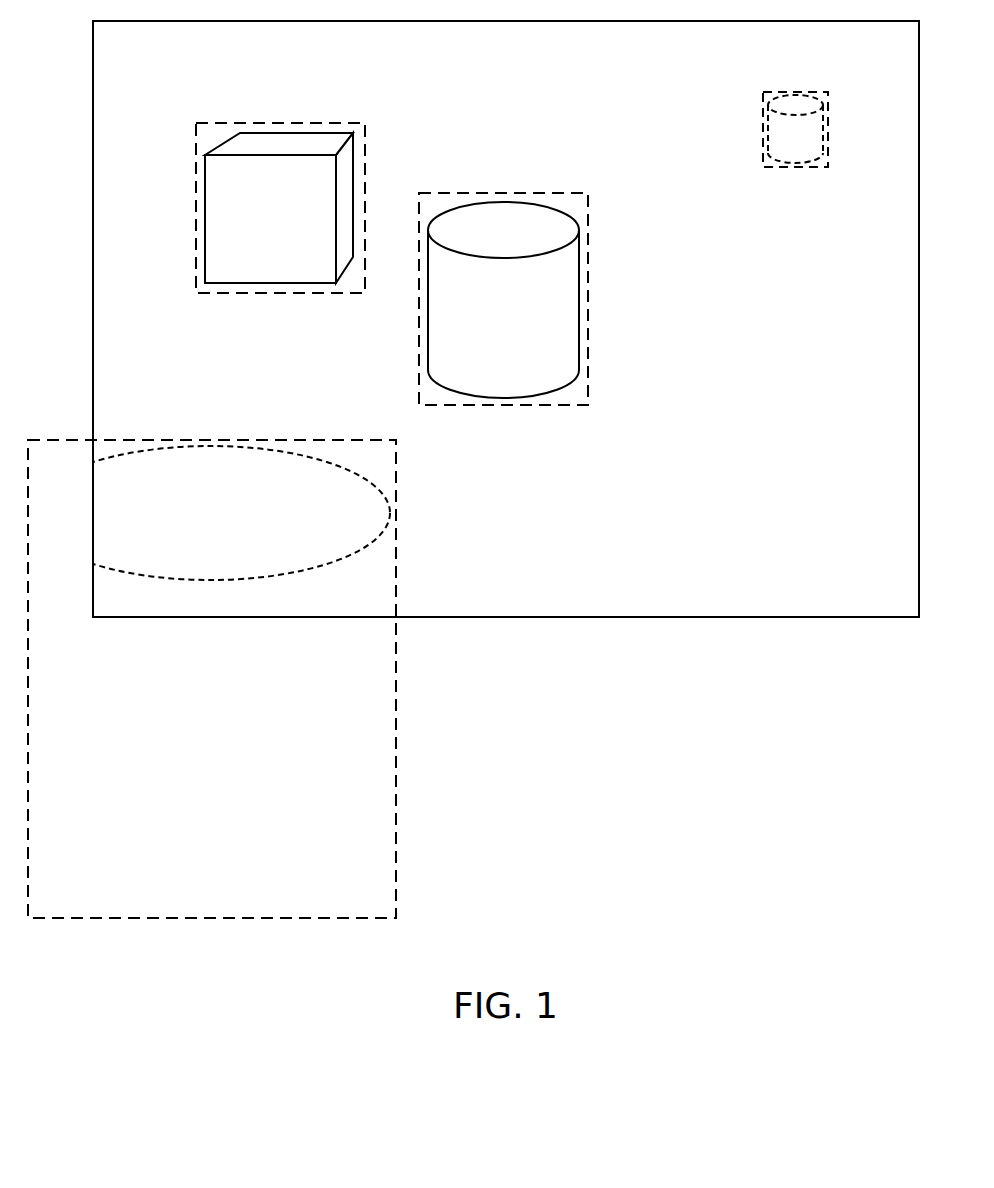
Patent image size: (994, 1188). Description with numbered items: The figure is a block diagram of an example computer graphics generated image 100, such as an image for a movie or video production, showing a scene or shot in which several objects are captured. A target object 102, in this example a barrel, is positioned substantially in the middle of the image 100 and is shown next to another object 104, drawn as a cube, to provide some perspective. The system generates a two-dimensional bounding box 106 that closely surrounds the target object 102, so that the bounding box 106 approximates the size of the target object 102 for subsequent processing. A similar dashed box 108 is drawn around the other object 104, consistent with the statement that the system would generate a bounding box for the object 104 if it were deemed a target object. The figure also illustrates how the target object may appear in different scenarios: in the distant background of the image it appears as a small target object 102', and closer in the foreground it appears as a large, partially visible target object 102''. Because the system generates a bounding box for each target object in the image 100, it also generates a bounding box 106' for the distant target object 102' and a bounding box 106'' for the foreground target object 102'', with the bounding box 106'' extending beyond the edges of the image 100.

The computer graphics generated image 100 is at (526, 962).
The target object 102 is at (505, 262).
The another object 104 is at (297, 133).
The 2D bounding box 106 is at (538, 299).
The bounding box of cube object 108 is at (365, 160).
The target object in distant background 102' is at (811, 97).
The 2D bounding box for distant target object 106' is at (834, 116).
The target object in foreground 102'' is at (210, 478).
The 2D bounding box for foreground target object 106'' is at (251, 679).